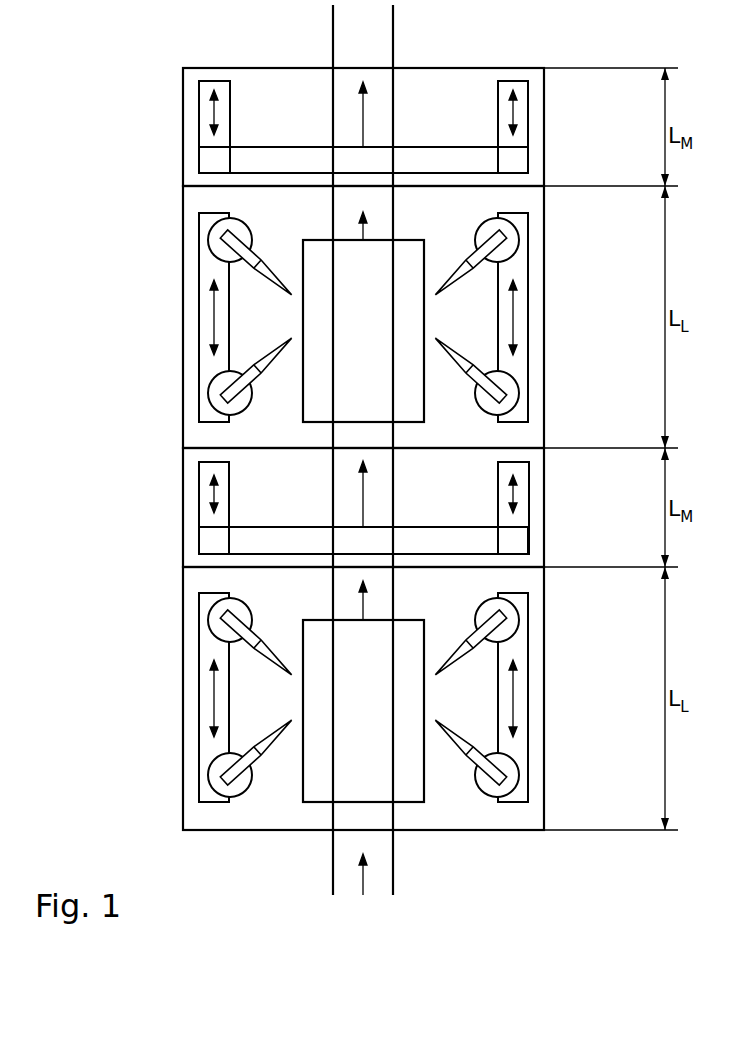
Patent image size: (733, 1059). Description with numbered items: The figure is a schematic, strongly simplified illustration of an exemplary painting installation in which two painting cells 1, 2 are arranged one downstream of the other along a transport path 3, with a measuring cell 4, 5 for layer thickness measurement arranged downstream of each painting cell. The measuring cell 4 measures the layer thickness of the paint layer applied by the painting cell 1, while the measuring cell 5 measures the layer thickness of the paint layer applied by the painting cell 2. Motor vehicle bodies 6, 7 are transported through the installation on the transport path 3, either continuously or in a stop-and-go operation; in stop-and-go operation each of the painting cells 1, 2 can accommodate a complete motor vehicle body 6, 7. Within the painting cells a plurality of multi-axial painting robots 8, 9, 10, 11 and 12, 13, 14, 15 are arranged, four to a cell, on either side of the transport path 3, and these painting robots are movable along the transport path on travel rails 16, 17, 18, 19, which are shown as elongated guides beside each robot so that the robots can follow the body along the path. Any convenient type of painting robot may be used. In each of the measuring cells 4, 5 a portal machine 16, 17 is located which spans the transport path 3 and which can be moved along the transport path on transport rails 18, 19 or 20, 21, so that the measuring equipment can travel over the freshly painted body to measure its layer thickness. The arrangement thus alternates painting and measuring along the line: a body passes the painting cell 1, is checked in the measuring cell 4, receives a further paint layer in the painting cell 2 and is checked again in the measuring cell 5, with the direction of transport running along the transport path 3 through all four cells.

The painting cell 1 is at (183, 733).
The painting cell 2 is at (183, 353).
The transport path 3 is at (395, 45).
The measuring cell 4 is at (544, 515).
The measuring cell 5 is at (183, 157).
The motor vehicle body 6 is at (425, 790).
The motor vehicle body 7 is at (323, 240).
The painting robot 8 is at (212, 620).
The painting robot 9 is at (212, 777).
The painting robot 10 is at (512, 620).
The painting robot 11 is at (512, 777).
The painting robot 12 is at (212, 240).
The painting robot 13 is at (212, 397).
The painting robot 14 is at (512, 240).
The painting robot 15 is at (512, 397).
The travel rail / portal machine 16 is at (483, 160).
The travel rail / portal machine 17 is at (529, 279).
The travel rail / transport rail 18 is at (198, 105).
The travel rail / transport rail 19 is at (528, 112).
The transport rail 20 is at (198, 485).
The transport rail 21 is at (529, 488).